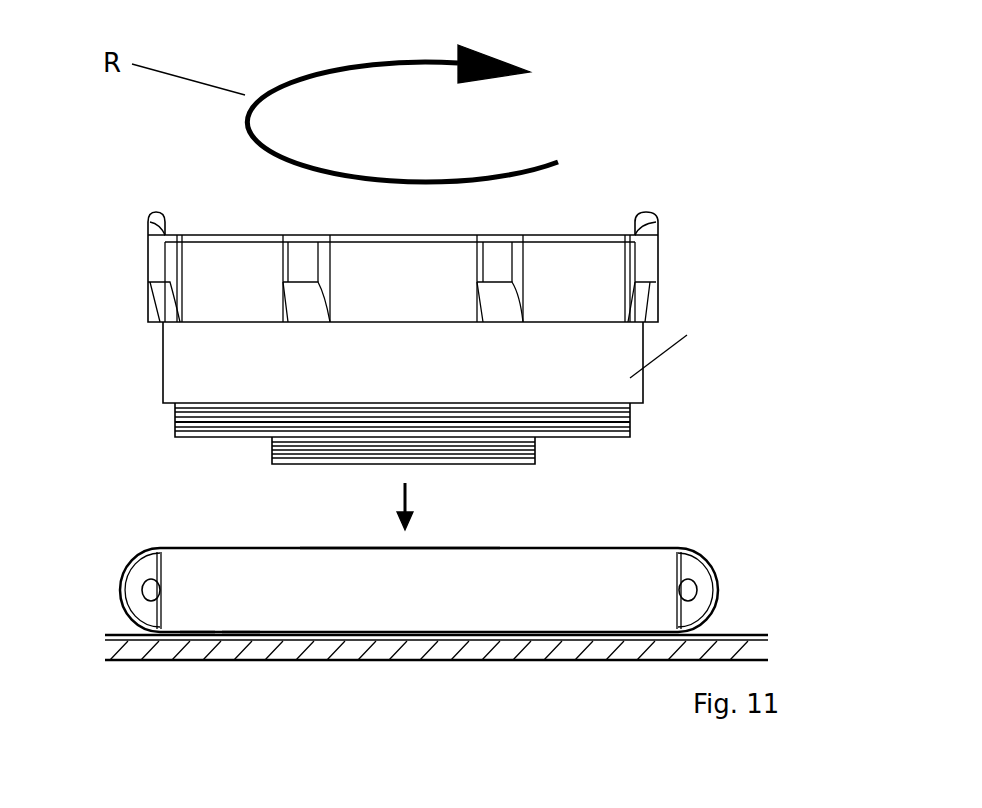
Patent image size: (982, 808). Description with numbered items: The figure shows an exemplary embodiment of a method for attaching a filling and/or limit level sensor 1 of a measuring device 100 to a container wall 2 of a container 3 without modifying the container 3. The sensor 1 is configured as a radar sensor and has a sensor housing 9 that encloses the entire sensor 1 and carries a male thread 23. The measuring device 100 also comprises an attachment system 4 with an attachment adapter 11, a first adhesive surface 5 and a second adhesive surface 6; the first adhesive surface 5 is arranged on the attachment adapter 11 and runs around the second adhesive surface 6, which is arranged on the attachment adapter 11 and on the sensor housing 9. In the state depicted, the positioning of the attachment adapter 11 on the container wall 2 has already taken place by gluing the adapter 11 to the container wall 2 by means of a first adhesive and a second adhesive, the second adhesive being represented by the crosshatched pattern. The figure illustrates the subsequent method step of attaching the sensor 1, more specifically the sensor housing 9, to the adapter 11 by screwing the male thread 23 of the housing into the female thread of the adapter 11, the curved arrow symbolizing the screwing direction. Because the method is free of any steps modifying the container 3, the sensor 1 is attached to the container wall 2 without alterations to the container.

The filling and/or limit level sensor 1 is at (115, 242).
The measuring device 100 is at (720, 288).
The sensor housing 9 is at (575, 376).
The male thread 23 is at (162, 437).
The attachment system 4 is at (758, 479).
The attachment adapter 11 is at (647, 574).
The first adhesive surface 5 is at (190, 632).
The second adhesive surface 6 is at (233, 632).
The container wall 2 is at (752, 650).
The container 3 is at (650, 647).